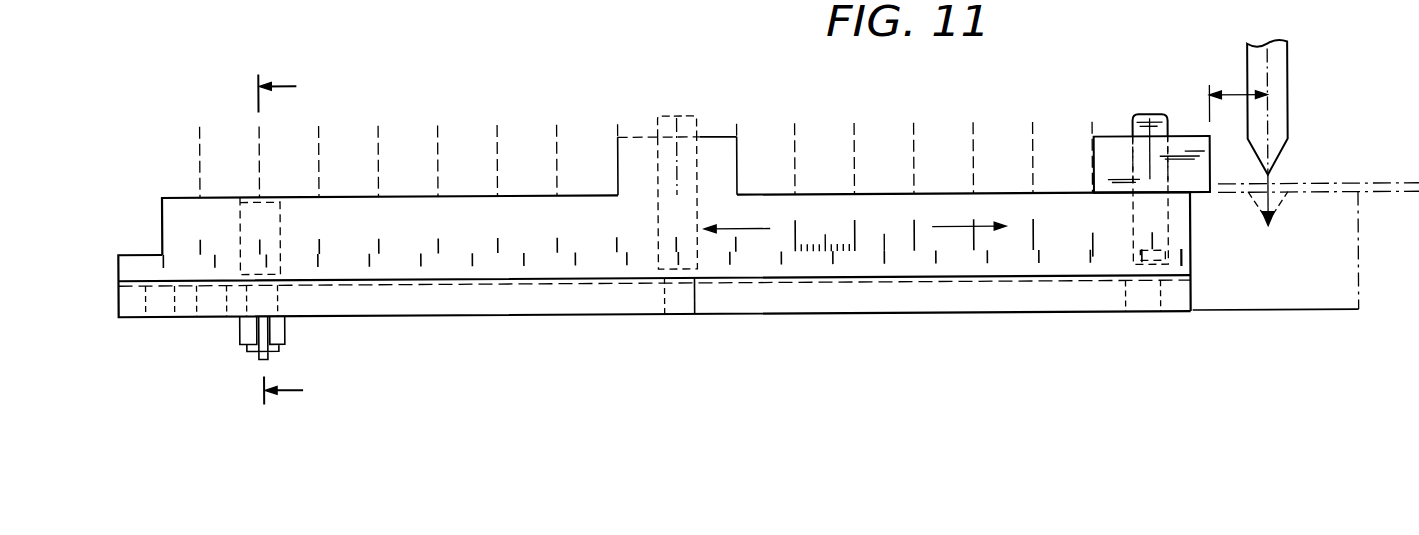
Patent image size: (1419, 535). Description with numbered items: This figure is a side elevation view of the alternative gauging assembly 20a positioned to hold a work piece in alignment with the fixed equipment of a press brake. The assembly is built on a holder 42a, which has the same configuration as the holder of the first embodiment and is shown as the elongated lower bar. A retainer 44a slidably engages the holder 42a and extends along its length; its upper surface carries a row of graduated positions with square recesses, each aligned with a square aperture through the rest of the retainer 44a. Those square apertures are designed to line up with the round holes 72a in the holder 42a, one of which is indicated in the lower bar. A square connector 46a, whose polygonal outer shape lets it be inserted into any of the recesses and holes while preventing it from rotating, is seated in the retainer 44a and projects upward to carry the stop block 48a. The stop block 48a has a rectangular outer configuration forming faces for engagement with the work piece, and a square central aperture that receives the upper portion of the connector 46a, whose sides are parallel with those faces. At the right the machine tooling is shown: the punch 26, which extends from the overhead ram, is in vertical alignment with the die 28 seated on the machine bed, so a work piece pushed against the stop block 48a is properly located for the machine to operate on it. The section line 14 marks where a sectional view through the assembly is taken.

The section line 14 is at (298, 240).
The gauging assembly 20a is at (545, 124).
The retainer 44a is at (832, 195).
The holder 42a is at (872, 316).
The round hole 72a is at (662, 307).
The stop block 48a is at (1113, 138).
The connector 46a is at (1156, 121).
The punch 26 is at (1284, 126).
The die 28 is at (1334, 303).